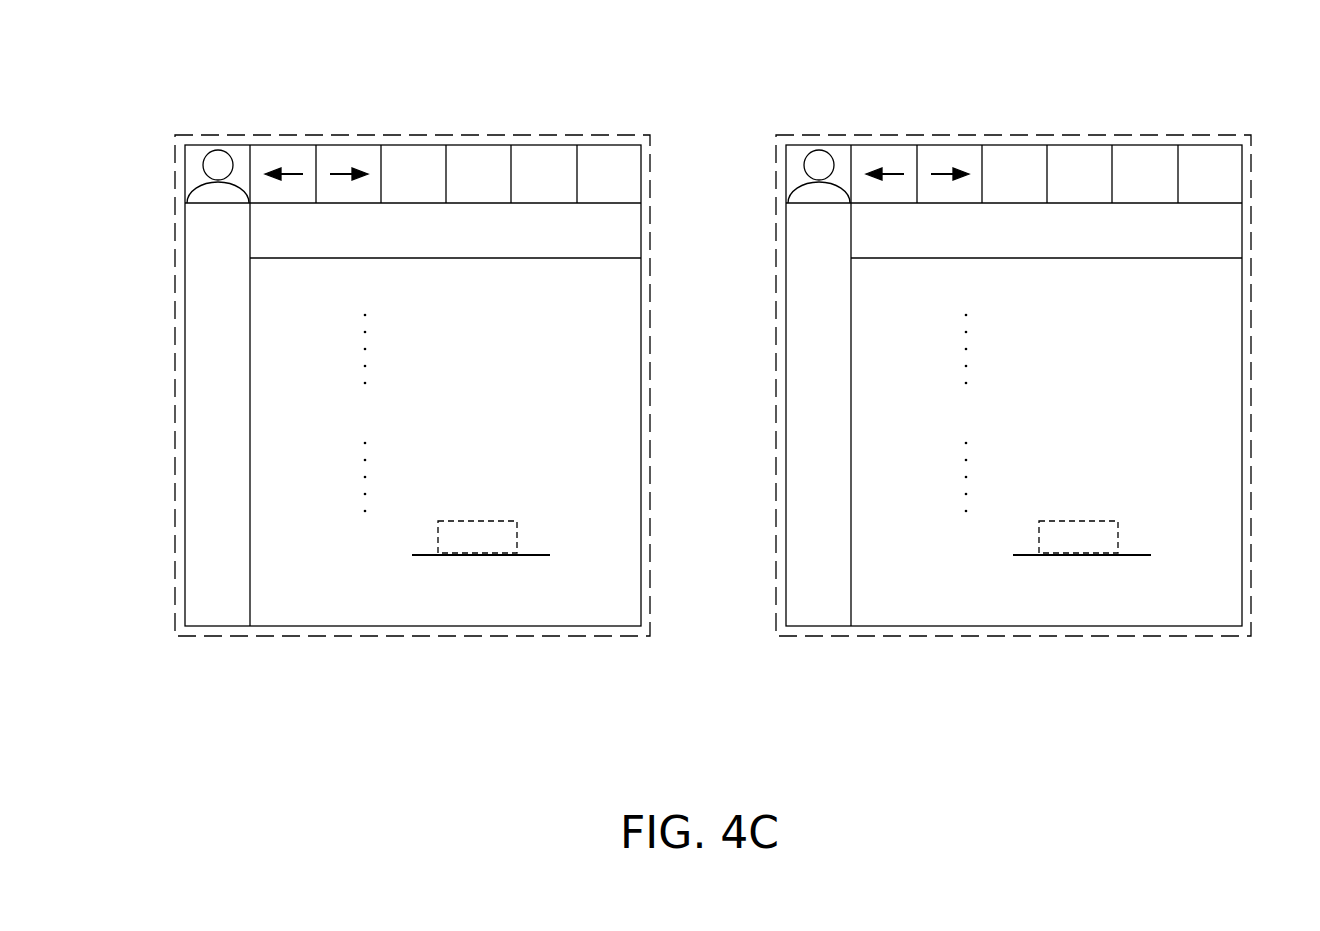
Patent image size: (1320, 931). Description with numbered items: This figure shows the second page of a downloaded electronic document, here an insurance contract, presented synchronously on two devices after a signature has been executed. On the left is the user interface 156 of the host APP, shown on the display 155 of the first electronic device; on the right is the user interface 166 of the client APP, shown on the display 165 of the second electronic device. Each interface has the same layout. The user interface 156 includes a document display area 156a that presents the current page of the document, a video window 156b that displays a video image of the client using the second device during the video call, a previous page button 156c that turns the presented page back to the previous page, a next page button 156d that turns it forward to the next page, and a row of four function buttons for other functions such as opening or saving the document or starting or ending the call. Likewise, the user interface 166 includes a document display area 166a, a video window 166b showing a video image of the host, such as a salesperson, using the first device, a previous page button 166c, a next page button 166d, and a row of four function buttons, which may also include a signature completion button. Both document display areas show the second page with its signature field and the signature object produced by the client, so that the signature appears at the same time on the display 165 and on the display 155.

The display 155 is at (510, 135).
The user interface of the host APP 156 is at (186, 230).
The document display area 156a is at (265, 327).
The video window 156b is at (218, 148).
The previous page button 156c is at (283, 153).
The next page button 156d is at (356, 152).
The display 165 is at (1013, 338).
The user interface of the client APP 166 is at (964, 385).
The document display area 166a is at (962, 276).
The video window 166b is at (818, 124).
The previous page button 166c is at (887, 98).
The next page button 166d is at (963, 111).